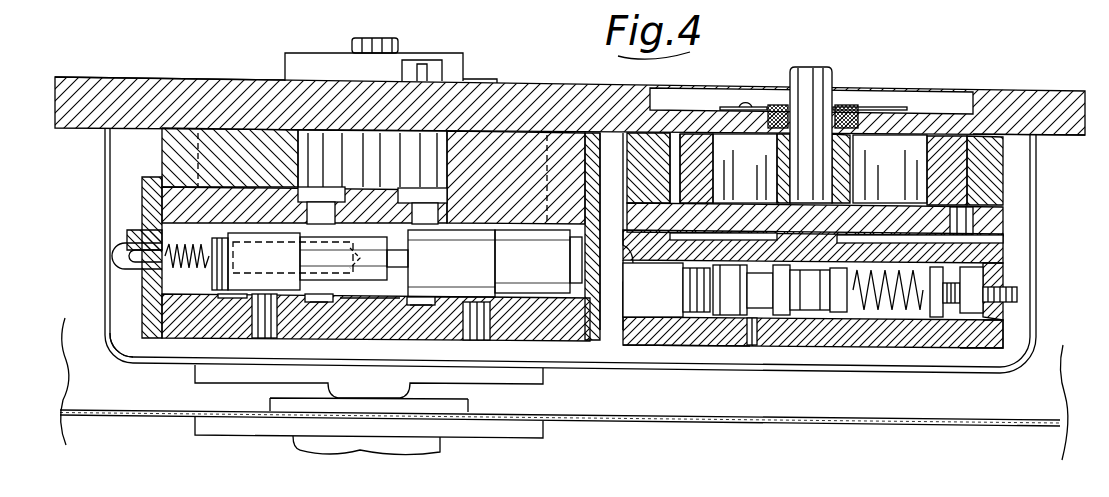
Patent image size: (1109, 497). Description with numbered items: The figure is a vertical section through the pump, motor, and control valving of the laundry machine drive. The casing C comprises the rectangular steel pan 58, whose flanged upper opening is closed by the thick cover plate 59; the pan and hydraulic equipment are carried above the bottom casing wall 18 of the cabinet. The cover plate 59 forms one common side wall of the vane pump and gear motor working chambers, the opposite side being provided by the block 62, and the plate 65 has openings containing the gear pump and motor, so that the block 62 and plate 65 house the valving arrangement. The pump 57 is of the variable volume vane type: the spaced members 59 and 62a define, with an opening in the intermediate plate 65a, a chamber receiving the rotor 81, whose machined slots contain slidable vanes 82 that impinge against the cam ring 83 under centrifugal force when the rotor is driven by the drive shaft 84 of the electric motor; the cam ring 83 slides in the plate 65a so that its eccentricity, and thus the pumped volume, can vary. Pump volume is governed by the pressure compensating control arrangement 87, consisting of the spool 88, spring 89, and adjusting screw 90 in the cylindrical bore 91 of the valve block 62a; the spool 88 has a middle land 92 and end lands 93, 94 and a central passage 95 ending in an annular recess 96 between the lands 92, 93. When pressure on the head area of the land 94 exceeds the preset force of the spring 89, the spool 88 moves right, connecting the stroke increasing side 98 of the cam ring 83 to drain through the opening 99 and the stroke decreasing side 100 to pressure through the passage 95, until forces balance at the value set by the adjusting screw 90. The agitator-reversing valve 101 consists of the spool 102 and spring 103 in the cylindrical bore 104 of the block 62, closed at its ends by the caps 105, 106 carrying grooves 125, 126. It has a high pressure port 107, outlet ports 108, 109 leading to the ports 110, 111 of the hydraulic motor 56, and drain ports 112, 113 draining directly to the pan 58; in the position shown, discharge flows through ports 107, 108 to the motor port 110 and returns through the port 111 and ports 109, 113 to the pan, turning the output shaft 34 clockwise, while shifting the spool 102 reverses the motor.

The bottom casing wall 18 is at (655, 419).
The output shaft 34 is at (400, 48).
The hydraulic motor 56 is at (155, 148).
The pump 57 is at (1012, 178).
The pan 58 is at (120, 352).
The cover plate 59 is at (68, 80).
The block 62 is at (562, 342).
The valve block 62a is at (986, 350).
The plate 65 is at (232, 135).
The intermediate plate 65a is at (986, 128).
The rotor 81 is at (840, 158).
The vanes 82 is at (764, 159).
The cam ring 83 is at (694, 134).
The drive shaft 84 is at (830, 68).
The pressure compensating control arrangement 87 is at (1012, 278).
The spool 88 is at (888, 290).
The spring 89 is at (879, 313).
The adjusting screw 90 is at (1020, 295).
The cylindrical bore 91 is at (666, 321).
The middle land 92 is at (784, 317).
The end land 93 is at (838, 317).
The end land 94 is at (734, 315).
The central passage 95 is at (690, 284).
The annular recess 96 is at (786, 317).
The stroke increasing side 98 is at (670, 136).
The opening 99 is at (752, 321).
The stroke decreasing side 100 is at (972, 162).
The agitator-reversing valve 101 is at (172, 338).
The spool 102 is at (241, 298).
The spring 103 is at (222, 280).
The cylindrical bore 104 is at (128, 238).
The cap 105 is at (142, 197).
The cap 106 is at (608, 186).
The high pressure port 107 is at (372, 300).
The outlet port 108 is at (320, 302).
The outlet port 109 is at (426, 303).
The motor port 110 is at (310, 261).
The motor port 111 is at (422, 236).
The drain port 112 is at (264, 322).
The drain port 113 is at (478, 336).
The groove 125 is at (118, 258).
The groove 126 is at (576, 256).
The casing C is at (162, 77).